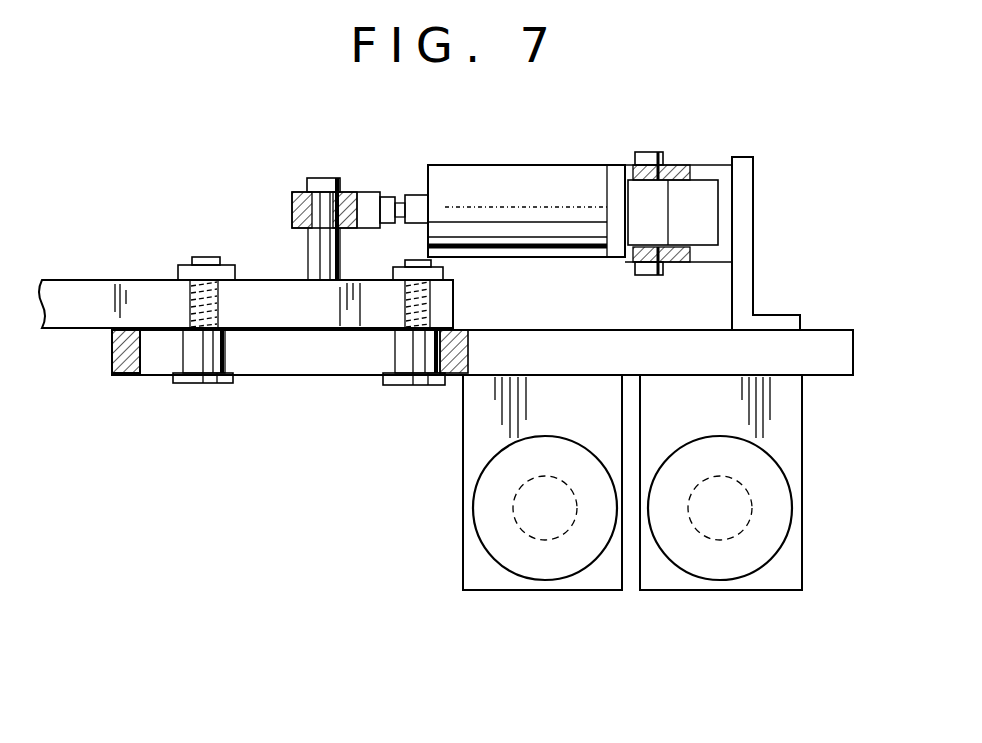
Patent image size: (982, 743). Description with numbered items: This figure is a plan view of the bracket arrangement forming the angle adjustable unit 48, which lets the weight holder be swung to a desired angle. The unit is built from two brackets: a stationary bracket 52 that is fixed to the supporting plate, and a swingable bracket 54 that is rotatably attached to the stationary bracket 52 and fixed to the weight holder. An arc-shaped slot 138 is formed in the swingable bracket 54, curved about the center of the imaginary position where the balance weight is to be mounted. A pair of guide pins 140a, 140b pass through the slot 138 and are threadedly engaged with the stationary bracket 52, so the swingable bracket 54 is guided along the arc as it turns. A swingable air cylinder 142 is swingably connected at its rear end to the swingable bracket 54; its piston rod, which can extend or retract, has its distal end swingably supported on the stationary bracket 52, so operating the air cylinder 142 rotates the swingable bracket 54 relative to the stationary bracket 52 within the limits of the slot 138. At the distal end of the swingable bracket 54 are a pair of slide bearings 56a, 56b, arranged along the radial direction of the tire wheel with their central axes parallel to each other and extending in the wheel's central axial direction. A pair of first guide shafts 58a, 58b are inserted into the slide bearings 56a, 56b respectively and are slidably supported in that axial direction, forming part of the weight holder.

The angle adjustable unit 48 is at (177, 201).
The stationary bracket 52 is at (151, 293).
The swingable bracket 54 is at (112, 350).
The arc-shaped slot 138 is at (293, 357).
The guide pin 140a is at (200, 384).
The guide pin 140b is at (412, 386).
The swingable air cylinder 142 is at (512, 187).
The slide bearing 56a is at (490, 590).
The slide bearing 56b is at (680, 590).
The first guide shaft 58a is at (565, 533).
The first guide shaft 58b is at (742, 532).